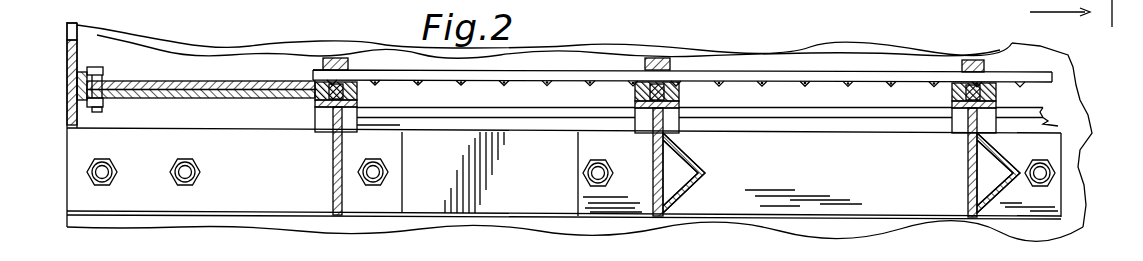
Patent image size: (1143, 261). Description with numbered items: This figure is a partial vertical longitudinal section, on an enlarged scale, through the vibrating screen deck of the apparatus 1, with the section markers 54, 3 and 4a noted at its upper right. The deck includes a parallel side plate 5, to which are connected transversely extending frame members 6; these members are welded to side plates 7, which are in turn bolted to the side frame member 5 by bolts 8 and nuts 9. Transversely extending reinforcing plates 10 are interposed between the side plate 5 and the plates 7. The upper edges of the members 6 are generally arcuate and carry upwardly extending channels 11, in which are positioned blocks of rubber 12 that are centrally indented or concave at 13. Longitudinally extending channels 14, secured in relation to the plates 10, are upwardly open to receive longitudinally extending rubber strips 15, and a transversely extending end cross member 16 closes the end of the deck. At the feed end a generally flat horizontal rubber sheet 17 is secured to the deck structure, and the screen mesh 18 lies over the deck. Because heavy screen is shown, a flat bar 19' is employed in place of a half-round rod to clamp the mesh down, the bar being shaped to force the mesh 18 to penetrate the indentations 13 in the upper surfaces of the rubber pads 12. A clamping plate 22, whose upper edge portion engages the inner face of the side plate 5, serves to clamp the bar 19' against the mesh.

The apparatus 1 is at (228, 0).
The side plate 5 is at (1068, 88).
The transversely extending frame member 6 is at (332, 159).
The side plate 7 is at (80, 148).
The bolt 8 is at (172, 167).
The nut 9 is at (172, 178).
The transversely extending reinforcing plate 10 is at (533, 147).
The upwardly extending channel 11 is at (320, 107).
The block of rubber 12 is at (357, 96).
The central indentation 13 is at (345, 87).
The longitudinally extending channel 14 is at (896, 127).
The longitudinally extending rubber strip 15 is at (822, 115).
The end cross member 16 is at (67, 60).
The flat horizontal rubber sheet 17 is at (141, 80).
The screen mesh 18 is at (776, 72).
The flat bar 19' is at (653, 39).
The clamping plate 22 is at (313, 62).
The section indicator 54 is at (1028, 15).
The section line 3 is at (1124, 12).
The section line 4a is at (1121, 34).